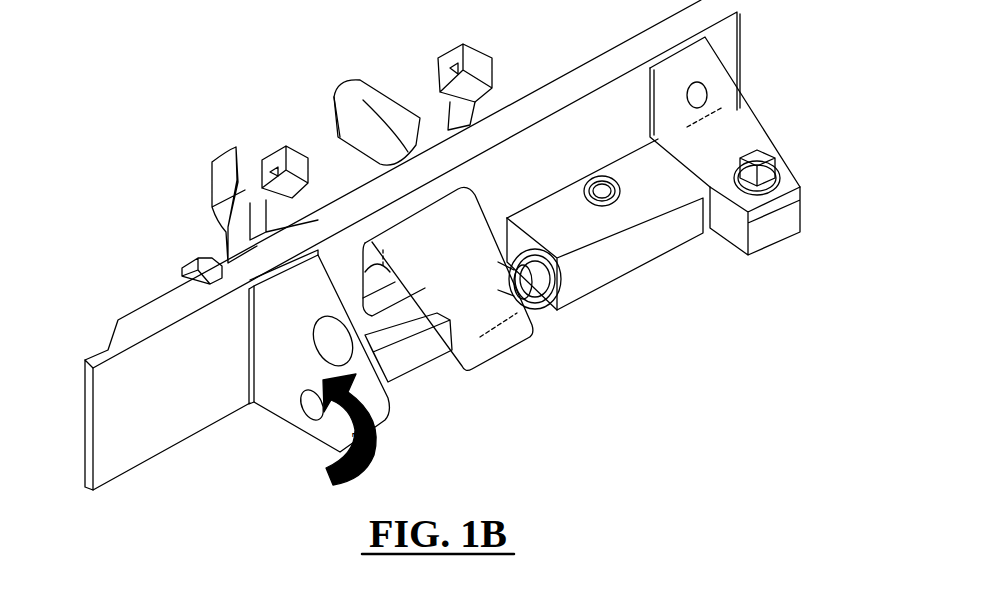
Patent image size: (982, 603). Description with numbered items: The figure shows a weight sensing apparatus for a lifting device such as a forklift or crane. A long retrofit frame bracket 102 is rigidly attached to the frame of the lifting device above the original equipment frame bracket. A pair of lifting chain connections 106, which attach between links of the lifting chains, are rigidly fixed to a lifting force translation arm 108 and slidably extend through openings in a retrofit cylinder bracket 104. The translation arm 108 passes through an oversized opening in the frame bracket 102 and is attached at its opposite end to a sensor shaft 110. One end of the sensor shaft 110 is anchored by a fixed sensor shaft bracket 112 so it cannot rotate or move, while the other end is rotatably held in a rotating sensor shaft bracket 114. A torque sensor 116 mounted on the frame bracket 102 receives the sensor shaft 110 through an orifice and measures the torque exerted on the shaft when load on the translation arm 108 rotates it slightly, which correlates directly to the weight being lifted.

The retrofit frame bracket 102 is at (412, 245).
The retrofit cylinder bracket 104 is at (357, 88).
The lifting chain connections 106 is at (280, 173).
The lifting force translation arm 108 is at (508, 333).
The sensor shaft 110 is at (413, 362).
The fixed sensor shaft bracket 112 is at (723, 130).
The rotating sensor shaft bracket 114 is at (287, 385).
The torque sensor 116 is at (633, 255).